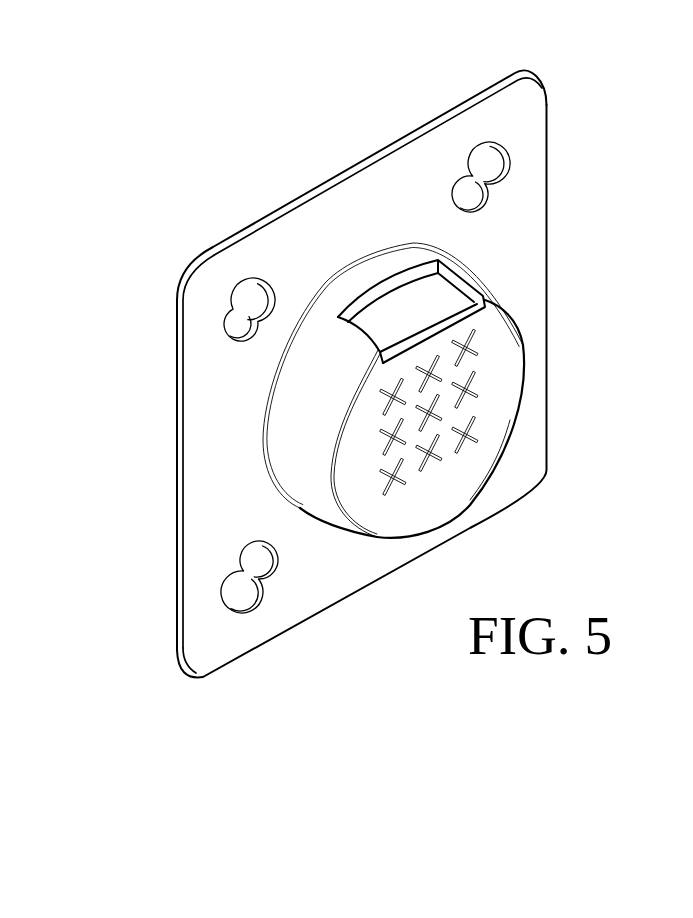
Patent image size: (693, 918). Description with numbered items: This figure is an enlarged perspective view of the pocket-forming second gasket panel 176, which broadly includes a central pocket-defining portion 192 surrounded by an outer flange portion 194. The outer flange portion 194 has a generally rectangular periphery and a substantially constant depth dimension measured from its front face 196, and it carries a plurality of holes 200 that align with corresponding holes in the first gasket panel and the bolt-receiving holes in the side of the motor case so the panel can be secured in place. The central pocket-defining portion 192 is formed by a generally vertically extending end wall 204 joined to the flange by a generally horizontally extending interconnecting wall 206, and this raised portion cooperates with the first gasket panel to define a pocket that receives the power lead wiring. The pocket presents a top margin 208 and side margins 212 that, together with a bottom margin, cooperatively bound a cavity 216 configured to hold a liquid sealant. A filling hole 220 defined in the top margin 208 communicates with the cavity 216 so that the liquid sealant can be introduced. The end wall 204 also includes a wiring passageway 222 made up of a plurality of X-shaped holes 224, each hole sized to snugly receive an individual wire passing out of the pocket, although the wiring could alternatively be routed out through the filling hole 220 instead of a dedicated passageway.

The second gasket panel 176 is at (378, 373).
The central pocket-defining portion 192 is at (362, 366).
The outer flange portion 194 is at (523, 468).
The front face 196 is at (362, 371).
The holes 200 is at (487, 168).
The end wall 204 is at (360, 500).
The interconnecting wall 206 is at (300, 383).
The top margin 208 is at (456, 223).
The side margin 212 is at (288, 477).
The cavity 216 is at (430, 303).
The filling hole 220 is at (377, 325).
The wiring passageway 222 is at (453, 418).
The X-shaped holes 224 is at (437, 457).